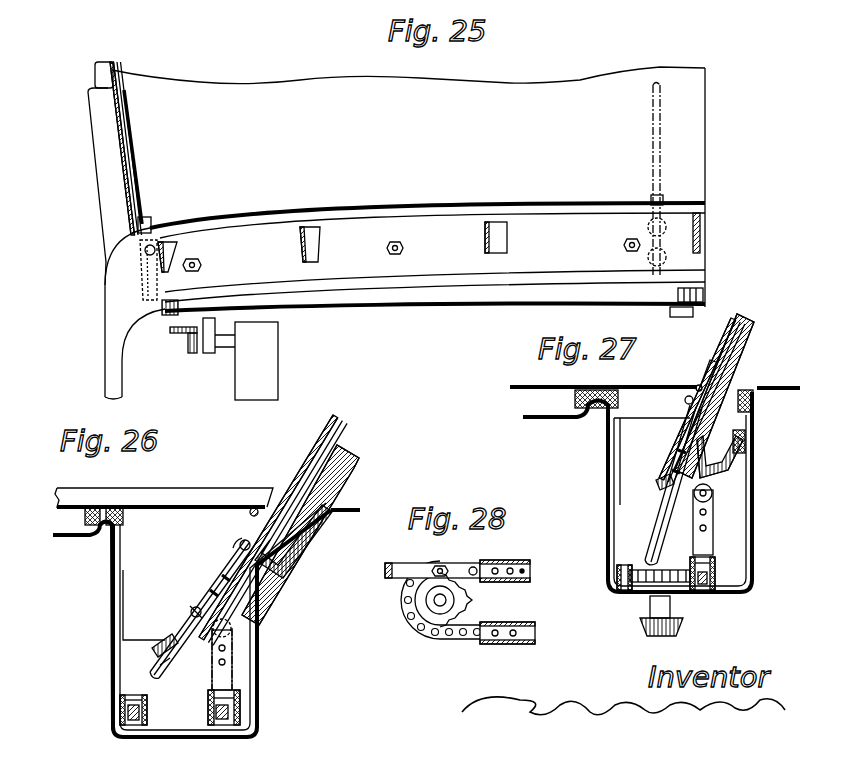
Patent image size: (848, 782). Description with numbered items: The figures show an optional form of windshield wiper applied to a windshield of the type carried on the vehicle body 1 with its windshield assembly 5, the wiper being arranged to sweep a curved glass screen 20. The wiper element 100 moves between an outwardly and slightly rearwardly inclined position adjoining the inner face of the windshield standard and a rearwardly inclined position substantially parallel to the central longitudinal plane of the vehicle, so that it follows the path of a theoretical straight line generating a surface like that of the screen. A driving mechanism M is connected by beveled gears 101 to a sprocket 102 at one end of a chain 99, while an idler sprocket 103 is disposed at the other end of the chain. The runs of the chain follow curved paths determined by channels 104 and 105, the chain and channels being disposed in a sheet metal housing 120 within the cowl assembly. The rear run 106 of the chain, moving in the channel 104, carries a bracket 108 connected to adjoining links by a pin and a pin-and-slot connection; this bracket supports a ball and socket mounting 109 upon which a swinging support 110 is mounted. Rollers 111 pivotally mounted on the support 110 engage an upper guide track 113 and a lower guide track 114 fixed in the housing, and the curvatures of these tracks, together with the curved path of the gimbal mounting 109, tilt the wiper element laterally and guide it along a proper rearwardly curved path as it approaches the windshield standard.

In FIG. 25, the post 1 is at (95, 75).
In FIG. 25, the seating unit 5 is at (97, 160).
In FIG. 25, the panel 20 is at (298, 85).
In FIG. 26, the panel 20 is at (352, 456).
In FIG. 27, the panel 20 is at (756, 336).
In FIG. 28, the chain 99 is at (456, 641).
In FIG. 27, the chain 99 is at (622, 568).
In FIG. 25, the wiper element 100 is at (137, 157).
In FIG. 26, the wiper element 100 is at (303, 455).
In FIG. 27, the wiper element 100 is at (722, 323).
In FIG. 25, the beveled gears 101 is at (186, 340).
In FIG. 25, the sprocket 102 is at (162, 308).
In FIG. 28, the sprocket 102 is at (420, 614).
In FIG. 25, the idler sprocket 103 is at (700, 290).
In FIG. 26, the channel 104 is at (242, 700).
In FIG. 28, the channel 104 is at (490, 560).
In FIG. 27, the channel 104 is at (716, 570).
In FIG. 25, the channel 105 is at (420, 297).
In FIG. 26, the channel 105 is at (115, 592).
In FIG. 28, the channel 105 is at (504, 645).
In FIG. 27, the channel 105 is at (616, 580).
In FIG. 26, the rear run 106 is at (212, 712).
In FIG. 28, the rear run 106 is at (500, 580).
In FIG. 27, the rear run 106 is at (712, 576).
In FIG. 26, the bracket 108 is at (240, 640).
In FIG. 28, the bracket 108 is at (410, 562).
In FIG. 27, the bracket 108 is at (706, 540).
In FIG. 25, the ball and socket mounting 109 is at (657, 179).
In FIG. 26, the ball and socket mounting 109 is at (228, 622).
In FIG. 27, the ball and socket mounting 109 is at (718, 490).
In FIG. 26, the swinging support 110 is at (255, 585).
In FIG. 27, the swinging support 110 is at (710, 385).
In FIG. 25, the rollers 111 is at (160, 285).
In FIG. 26, the rollers 111 is at (202, 609).
In FIG. 27, the rollers 111 is at (680, 431).
In FIG. 25, the upper guide track 113 is at (360, 223).
In FIG. 26, the upper guide track 113 is at (236, 540).
In FIG. 27, the upper guide track 113 is at (686, 404).
In FIG. 25, the lower guide track 114 is at (437, 272).
In FIG. 26, the lower guide track 114 is at (150, 668).
In FIG. 27, the lower guide track 114 is at (665, 482).
In FIG. 25, the sheet metal housing 120 is at (483, 305).
In FIG. 26, the sheet metal housing 120 is at (258, 660).
In FIG. 27, the sheet metal housing 120 is at (612, 505).
In FIG. 25, the driving mechanism M is at (279, 338).